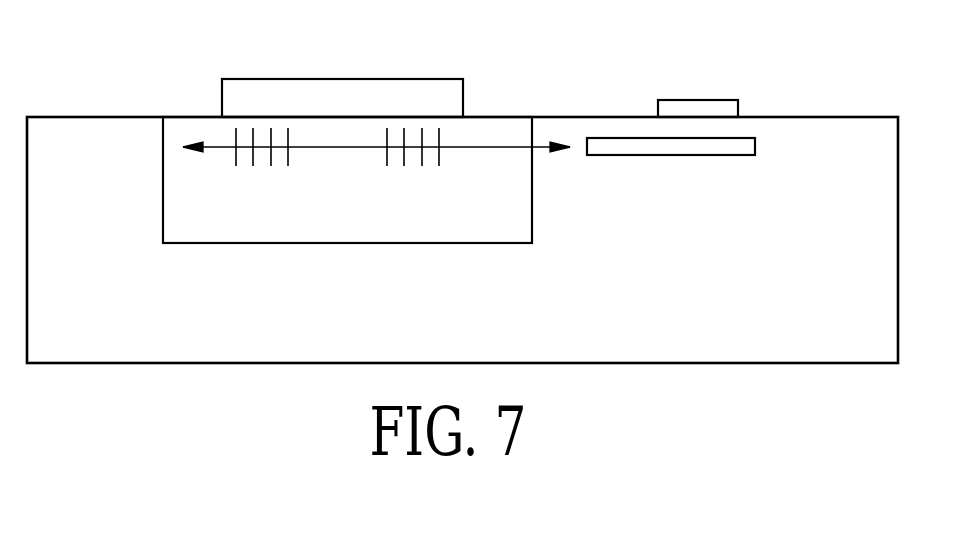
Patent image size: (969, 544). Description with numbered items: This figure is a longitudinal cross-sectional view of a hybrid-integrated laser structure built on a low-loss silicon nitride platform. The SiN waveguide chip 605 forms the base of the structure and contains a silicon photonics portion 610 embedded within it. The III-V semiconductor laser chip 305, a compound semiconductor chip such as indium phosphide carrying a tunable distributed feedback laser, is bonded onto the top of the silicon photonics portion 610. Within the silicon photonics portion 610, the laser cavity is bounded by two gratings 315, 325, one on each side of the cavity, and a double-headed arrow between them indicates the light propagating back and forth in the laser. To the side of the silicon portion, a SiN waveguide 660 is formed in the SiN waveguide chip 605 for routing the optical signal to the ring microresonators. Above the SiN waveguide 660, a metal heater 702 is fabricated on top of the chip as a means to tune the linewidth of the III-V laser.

The laser chip 305 is at (380, 78).
The grating 315 is at (261, 167).
The grating 325 is at (412, 167).
The SiN waveguide chip 605 is at (153, 366).
The silicon photonics portion 610 is at (252, 246).
The SiN waveguide 660 is at (667, 155).
The metal heater 702 is at (738, 105).